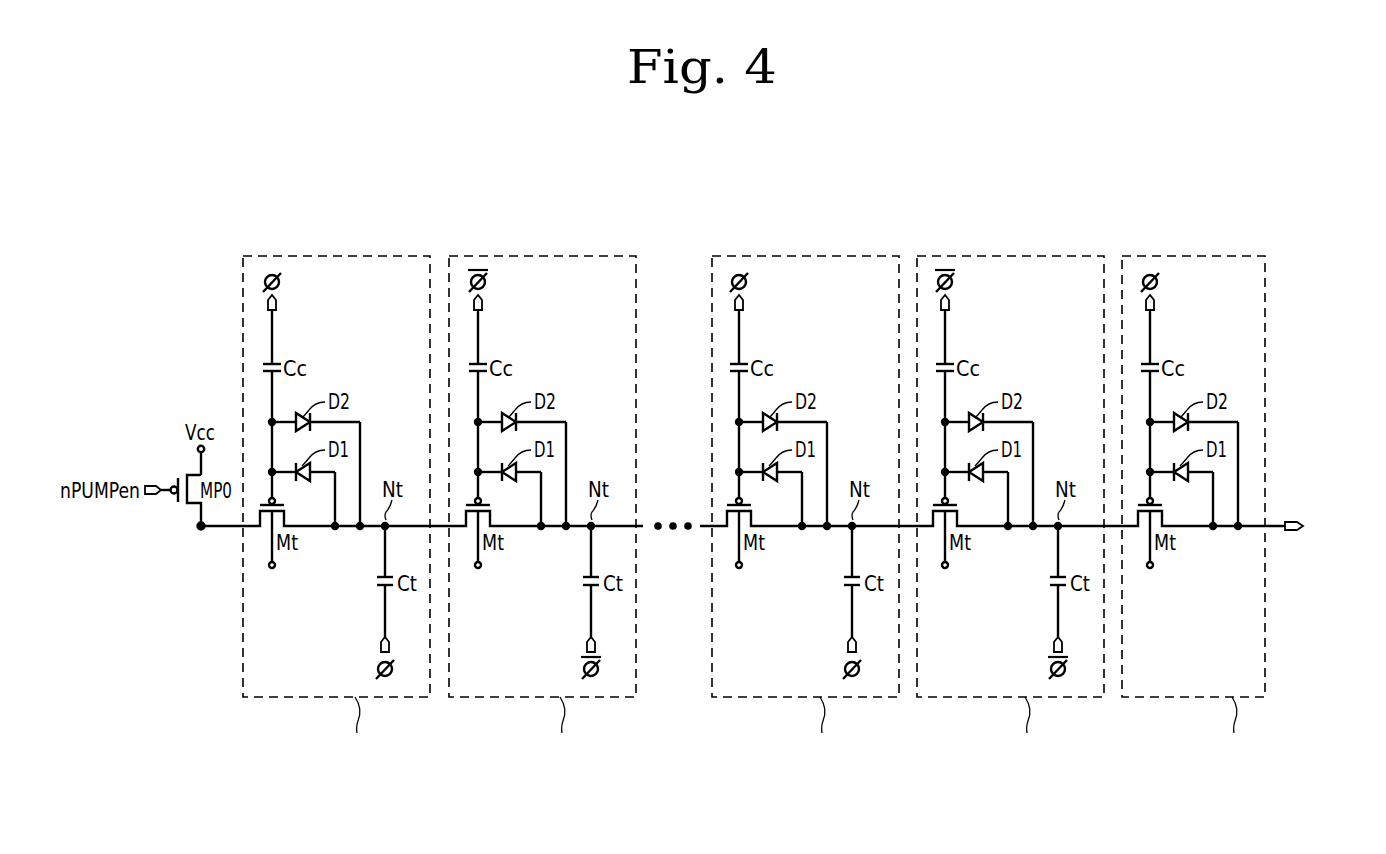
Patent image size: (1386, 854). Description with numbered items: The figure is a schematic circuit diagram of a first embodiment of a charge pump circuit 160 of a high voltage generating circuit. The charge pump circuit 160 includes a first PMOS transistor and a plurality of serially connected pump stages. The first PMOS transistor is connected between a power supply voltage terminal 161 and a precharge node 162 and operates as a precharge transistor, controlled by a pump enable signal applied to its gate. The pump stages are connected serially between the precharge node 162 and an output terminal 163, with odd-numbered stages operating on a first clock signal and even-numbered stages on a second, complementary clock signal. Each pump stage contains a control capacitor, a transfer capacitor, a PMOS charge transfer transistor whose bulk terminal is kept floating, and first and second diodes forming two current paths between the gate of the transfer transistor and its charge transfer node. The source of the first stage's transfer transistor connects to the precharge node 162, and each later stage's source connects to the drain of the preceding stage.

The charge pump circuit 160 is at (1237, 188).
The power supply voltage terminal 161 is at (197, 448).
The precharge node 162 is at (198, 527).
The output terminal 163 is at (1292, 531).